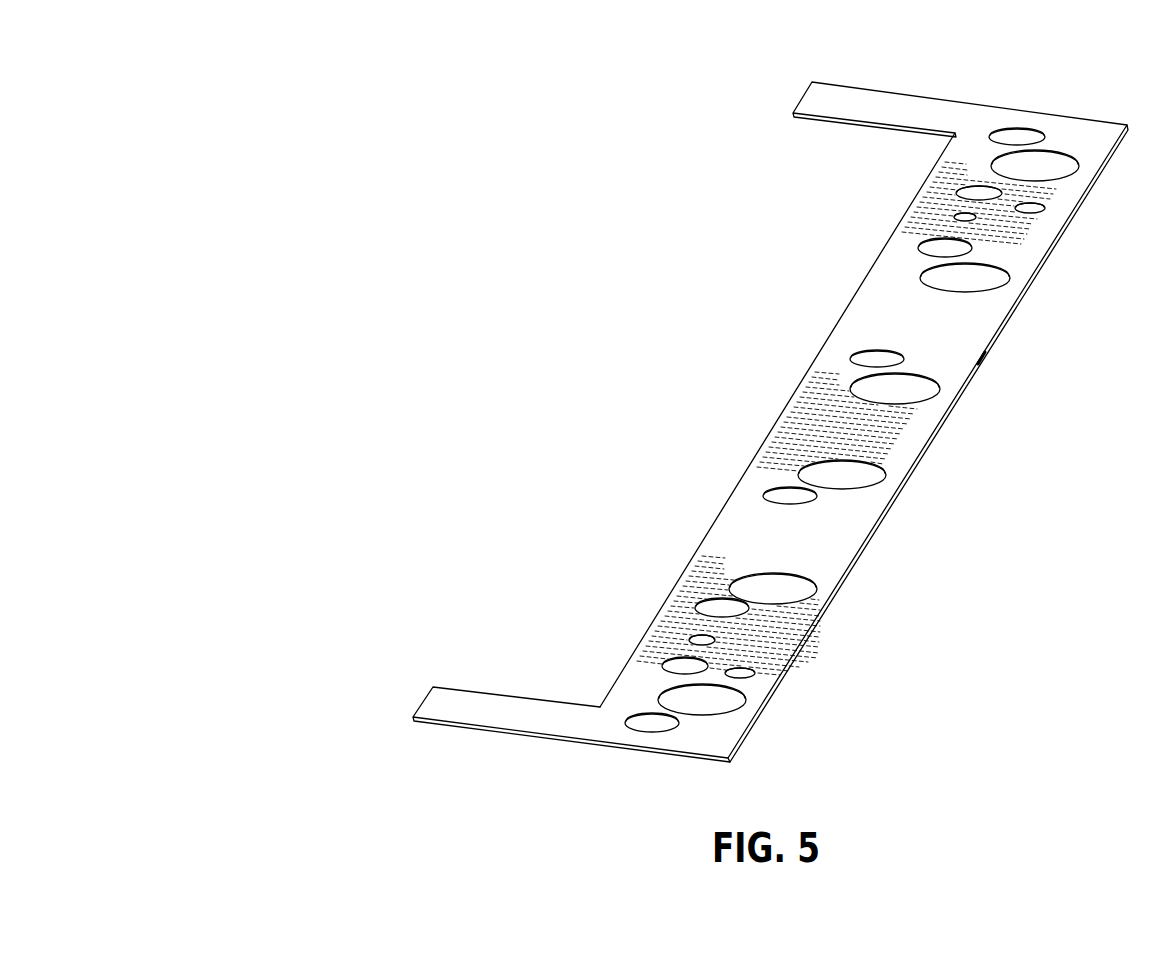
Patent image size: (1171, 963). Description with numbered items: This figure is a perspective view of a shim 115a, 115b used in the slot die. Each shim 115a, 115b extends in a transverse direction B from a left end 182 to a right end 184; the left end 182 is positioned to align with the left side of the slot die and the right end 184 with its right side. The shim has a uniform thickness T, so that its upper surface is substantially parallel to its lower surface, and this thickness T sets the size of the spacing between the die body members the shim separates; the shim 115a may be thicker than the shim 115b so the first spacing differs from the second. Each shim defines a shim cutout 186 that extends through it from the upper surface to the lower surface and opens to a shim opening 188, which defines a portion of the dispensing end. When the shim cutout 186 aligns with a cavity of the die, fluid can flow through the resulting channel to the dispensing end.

The shim 115a is at (668, 420).
The shim 115b is at (668, 420).
The left end 182 is at (1011, 106).
The right end 184 is at (460, 733).
The shim cutout 186 is at (743, 470).
The shim opening 188 is at (466, 512).
The thickness T is at (986, 363).
The transverse direction B is at (684, 98).